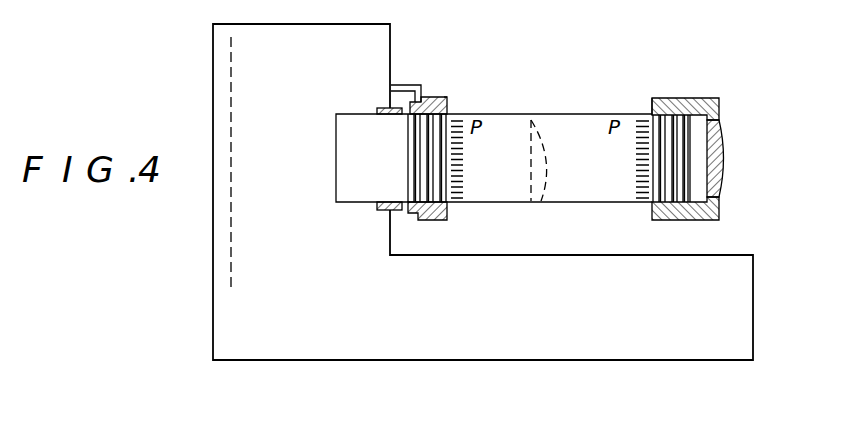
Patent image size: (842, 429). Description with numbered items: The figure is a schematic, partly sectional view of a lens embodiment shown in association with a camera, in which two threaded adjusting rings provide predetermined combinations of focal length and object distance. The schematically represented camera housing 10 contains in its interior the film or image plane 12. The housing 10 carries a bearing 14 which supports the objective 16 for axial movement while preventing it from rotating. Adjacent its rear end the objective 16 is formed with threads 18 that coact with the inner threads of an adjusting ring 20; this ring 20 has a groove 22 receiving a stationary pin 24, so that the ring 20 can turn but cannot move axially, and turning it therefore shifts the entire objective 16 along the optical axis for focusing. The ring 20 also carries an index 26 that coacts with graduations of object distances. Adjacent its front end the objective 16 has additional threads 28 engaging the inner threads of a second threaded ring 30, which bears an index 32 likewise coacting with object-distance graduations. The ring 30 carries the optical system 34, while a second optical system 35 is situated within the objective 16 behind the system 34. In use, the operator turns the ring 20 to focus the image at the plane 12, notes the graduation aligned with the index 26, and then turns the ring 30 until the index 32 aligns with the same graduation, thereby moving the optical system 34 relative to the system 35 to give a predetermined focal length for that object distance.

The camera housing 10 is at (254, 374).
The film or image plane 12 is at (232, 103).
The bearing 14 is at (386, 208).
The objective 16 is at (508, 113).
The threads 18 is at (440, 191).
The adjusting ring 20 is at (430, 96).
The groove 22 is at (416, 216).
The stationary pin 24 is at (405, 84).
The index 26 is at (447, 99).
The additional threads 28 is at (662, 187).
The second threaded ring 30 is at (688, 97).
The index 32 is at (654, 97).
The optical system 34 is at (725, 158).
The second optical system 35 is at (541, 203).